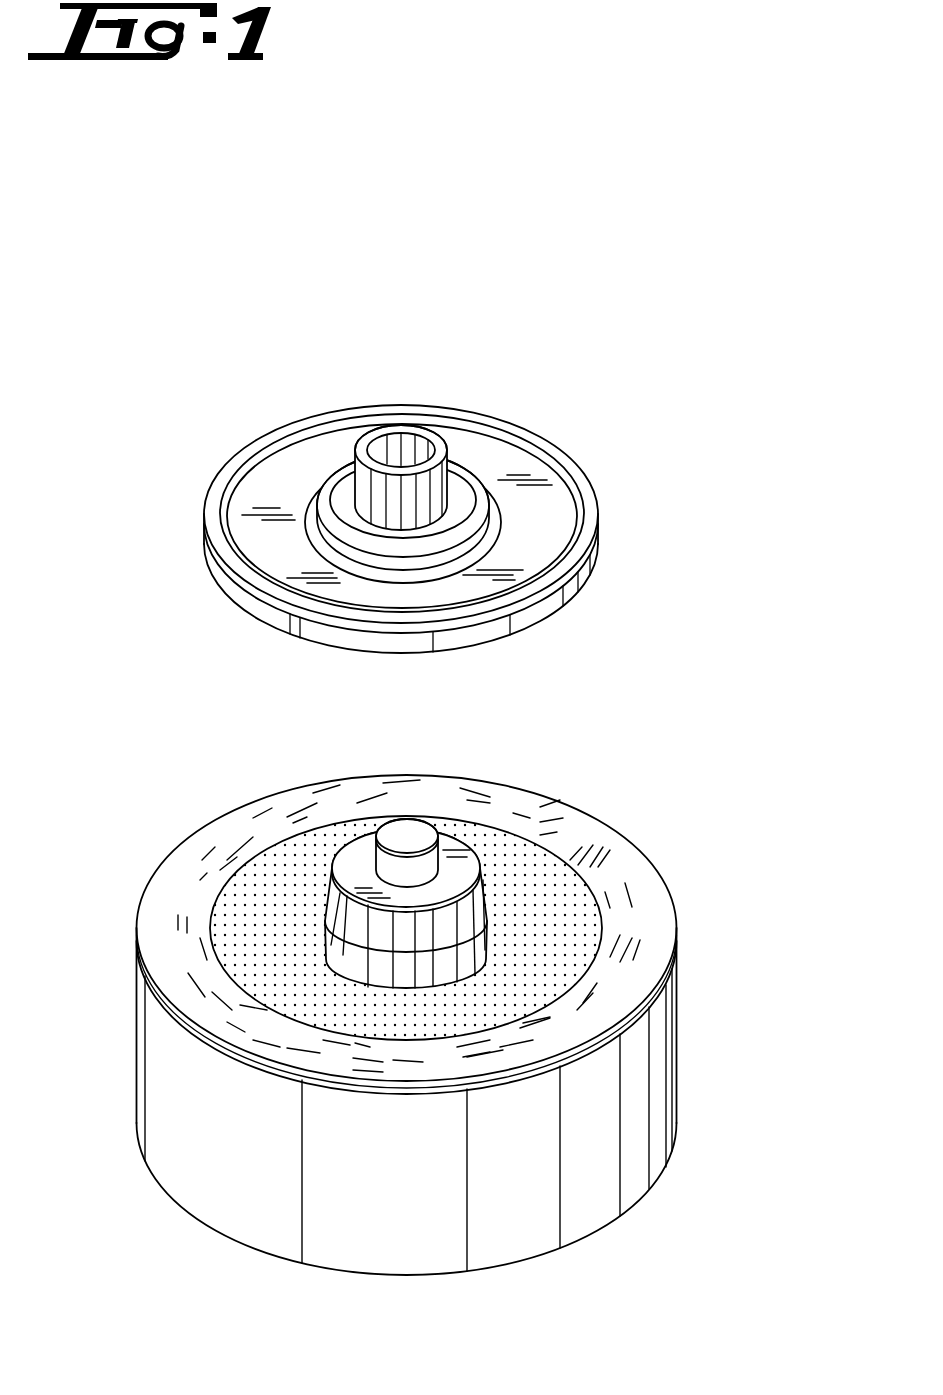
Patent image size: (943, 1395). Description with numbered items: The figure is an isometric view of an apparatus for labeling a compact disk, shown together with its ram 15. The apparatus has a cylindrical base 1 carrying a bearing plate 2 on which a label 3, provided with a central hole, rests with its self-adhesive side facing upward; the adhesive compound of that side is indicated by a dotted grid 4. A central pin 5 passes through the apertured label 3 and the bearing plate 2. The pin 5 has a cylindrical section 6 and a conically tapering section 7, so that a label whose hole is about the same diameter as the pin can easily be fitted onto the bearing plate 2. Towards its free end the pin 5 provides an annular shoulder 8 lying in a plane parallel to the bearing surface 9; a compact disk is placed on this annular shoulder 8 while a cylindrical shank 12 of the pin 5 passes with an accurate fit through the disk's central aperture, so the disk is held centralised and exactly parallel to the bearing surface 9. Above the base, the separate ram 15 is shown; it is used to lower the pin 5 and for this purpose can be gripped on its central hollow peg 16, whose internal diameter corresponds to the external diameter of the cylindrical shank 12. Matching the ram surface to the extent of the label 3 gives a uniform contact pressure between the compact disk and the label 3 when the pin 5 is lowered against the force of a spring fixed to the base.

The cylindrical base 1 is at (485, 965).
The bearing plate 2 is at (505, 1025).
The label 3 is at (565, 860).
The dotted grid 4 is at (515, 865).
The central pin 5 is at (400, 958).
The cylindrical section 6 is at (340, 945).
The conically tapering section 7 is at (365, 930).
The annular shoulder 8 is at (353, 862).
The bearing surface 9 is at (647, 898).
The cylindrical shank 12 is at (408, 823).
The ram 15 is at (511, 445).
The central hollow peg 16 is at (437, 443).